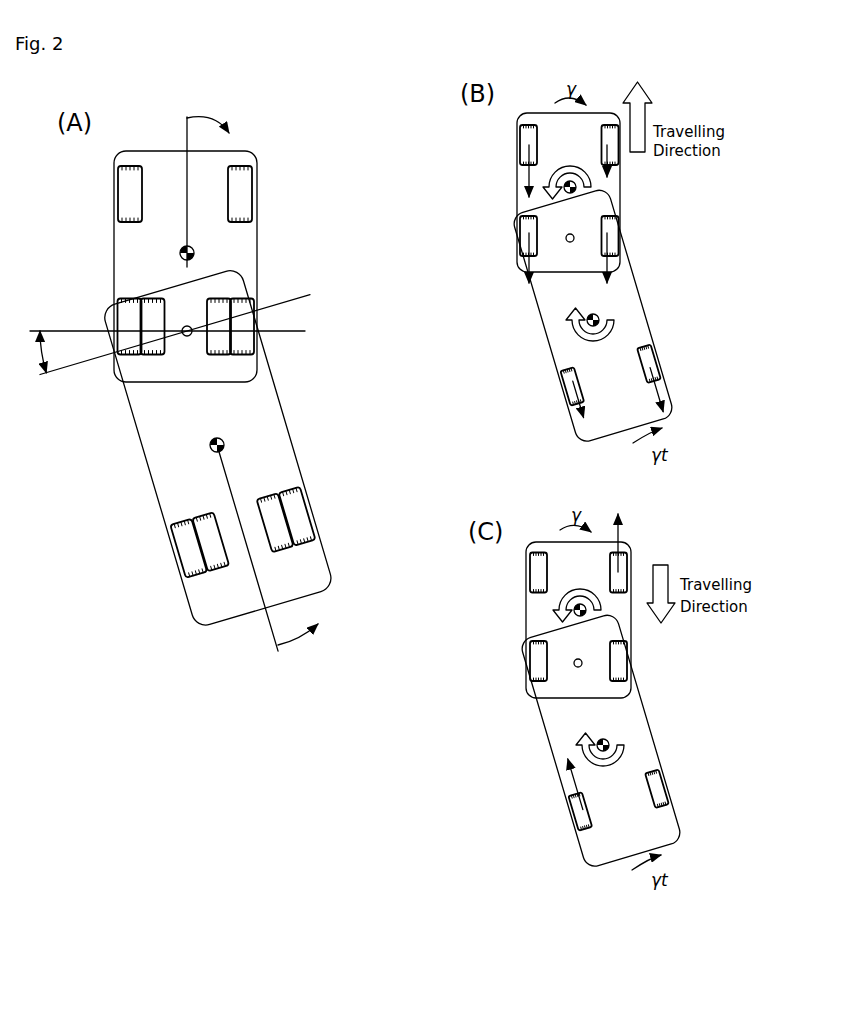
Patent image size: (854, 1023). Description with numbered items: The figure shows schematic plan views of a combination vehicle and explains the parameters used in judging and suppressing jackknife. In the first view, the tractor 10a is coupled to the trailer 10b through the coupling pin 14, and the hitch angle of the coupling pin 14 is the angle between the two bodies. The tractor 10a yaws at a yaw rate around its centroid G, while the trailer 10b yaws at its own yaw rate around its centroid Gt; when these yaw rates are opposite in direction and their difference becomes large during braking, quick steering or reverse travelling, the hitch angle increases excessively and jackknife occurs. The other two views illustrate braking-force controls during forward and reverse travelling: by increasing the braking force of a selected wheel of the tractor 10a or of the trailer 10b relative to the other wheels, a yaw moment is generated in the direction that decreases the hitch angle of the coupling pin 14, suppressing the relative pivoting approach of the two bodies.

The tractor 10a is at (258, 267).
The trailer 10b is at (147, 463).
The coupling pin 14 is at (188, 337).
The centroid of the tractor G is at (182, 260).
The centroid of the trailer Gt is at (220, 438).